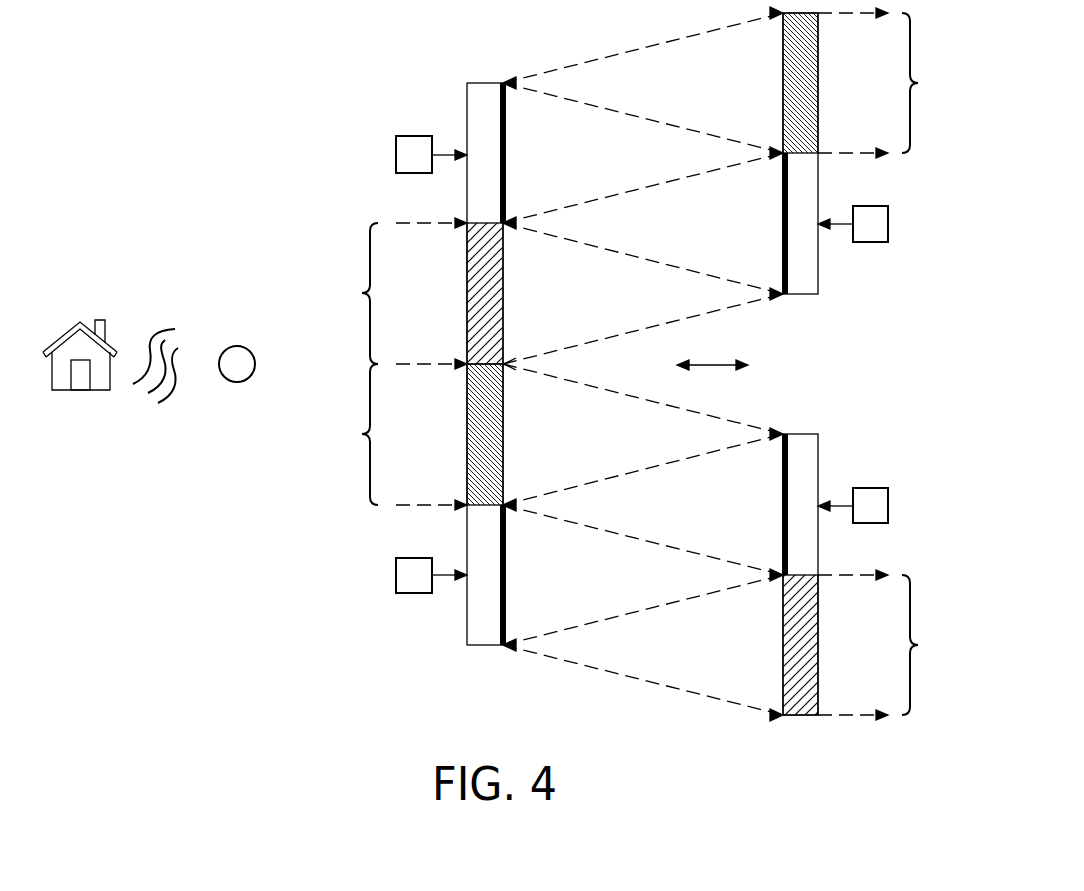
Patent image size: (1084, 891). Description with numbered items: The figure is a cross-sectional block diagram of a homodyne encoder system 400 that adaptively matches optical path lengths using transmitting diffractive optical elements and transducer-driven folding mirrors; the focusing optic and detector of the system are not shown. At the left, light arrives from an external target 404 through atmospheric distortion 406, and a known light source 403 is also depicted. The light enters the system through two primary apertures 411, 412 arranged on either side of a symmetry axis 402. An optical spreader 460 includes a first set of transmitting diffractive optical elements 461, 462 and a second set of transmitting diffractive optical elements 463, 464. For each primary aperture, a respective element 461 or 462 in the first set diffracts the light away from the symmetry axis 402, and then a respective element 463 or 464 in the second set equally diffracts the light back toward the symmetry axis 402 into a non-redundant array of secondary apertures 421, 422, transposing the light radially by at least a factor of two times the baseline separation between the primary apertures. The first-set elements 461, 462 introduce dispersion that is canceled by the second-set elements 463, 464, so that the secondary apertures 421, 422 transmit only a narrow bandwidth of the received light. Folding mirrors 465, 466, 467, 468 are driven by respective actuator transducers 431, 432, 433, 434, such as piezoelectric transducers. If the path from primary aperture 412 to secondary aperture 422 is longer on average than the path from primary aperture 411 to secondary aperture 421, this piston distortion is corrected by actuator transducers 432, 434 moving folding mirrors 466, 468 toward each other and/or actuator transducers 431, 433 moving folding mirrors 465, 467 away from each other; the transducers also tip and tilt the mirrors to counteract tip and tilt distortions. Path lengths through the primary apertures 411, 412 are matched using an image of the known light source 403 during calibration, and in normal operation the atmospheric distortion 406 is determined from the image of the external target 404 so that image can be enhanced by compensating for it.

The homodyne encoder system 400 is at (236, 51).
The symmetry axis 402 is at (720, 362).
The known light source 403 is at (237, 382).
The external target 404 is at (100, 390).
The atmospheric distortion 406 is at (176, 329).
The primary aperture 411 is at (397, 291).
The primary aperture 412 is at (397, 434).
The secondary aperture 421 is at (890, 83).
The secondary aperture 422 is at (890, 645).
The actuator transducer 431 is at (889, 224).
The actuator transducer 432 is at (889, 506).
The actuator transducer 433 is at (395, 155).
The actuator transducer 434 is at (395, 575).
The optical spreader 460 is at (411, 51).
The transmitting diffractive optical element 461 is at (504, 296).
The transmitting diffractive optical element 462 is at (504, 436).
The transmitting diffractive optical element 463 is at (782, 84).
The transmitting diffractive optical element 464 is at (782, 645).
The folding mirror 465 is at (782, 224).
The folding mirror 466 is at (782, 506).
The folding mirror 467 is at (505, 156).
The folding mirror 468 is at (505, 576).